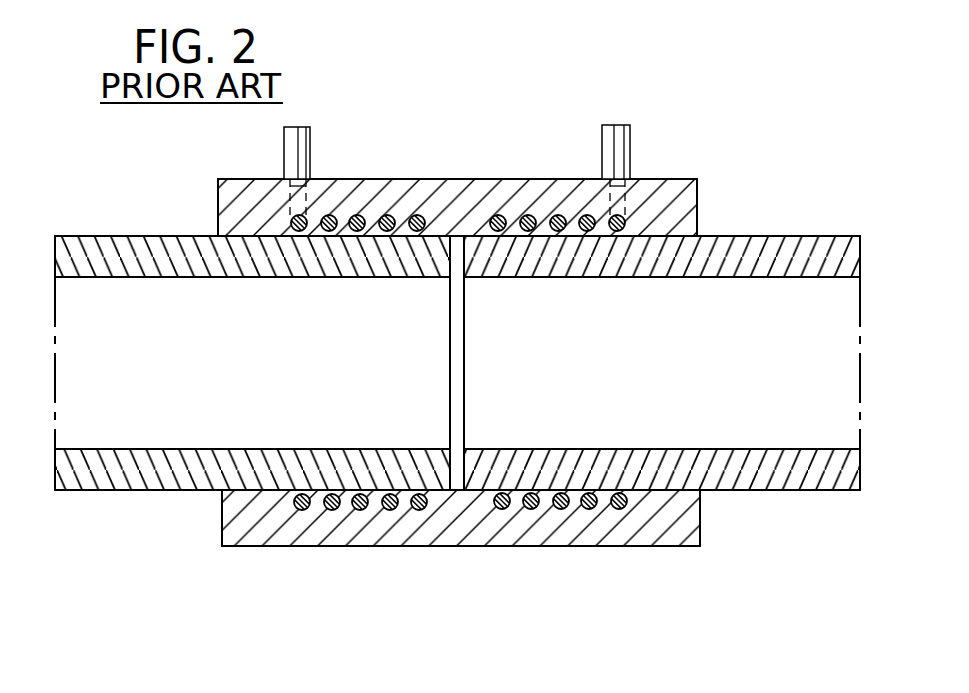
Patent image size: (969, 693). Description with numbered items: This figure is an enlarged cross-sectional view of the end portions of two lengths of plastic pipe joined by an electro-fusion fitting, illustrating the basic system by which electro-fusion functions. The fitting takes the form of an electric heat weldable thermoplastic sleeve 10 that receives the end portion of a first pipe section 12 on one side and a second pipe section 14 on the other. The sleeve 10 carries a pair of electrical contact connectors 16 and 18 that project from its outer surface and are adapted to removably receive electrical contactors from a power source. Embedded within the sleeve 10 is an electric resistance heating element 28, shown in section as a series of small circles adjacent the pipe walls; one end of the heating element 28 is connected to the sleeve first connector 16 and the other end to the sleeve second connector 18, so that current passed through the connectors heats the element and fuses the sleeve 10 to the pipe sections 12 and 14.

The electric heat weldable thermoplastic sleeve 10 is at (612, 557).
The first pipe section 12 is at (789, 236).
The second pipe section 14 is at (154, 237).
The first electrical contact connector 16 is at (298, 127).
The second electrical contact connector 18 is at (614, 125).
The electric resistance heating element 28 is at (417, 216).